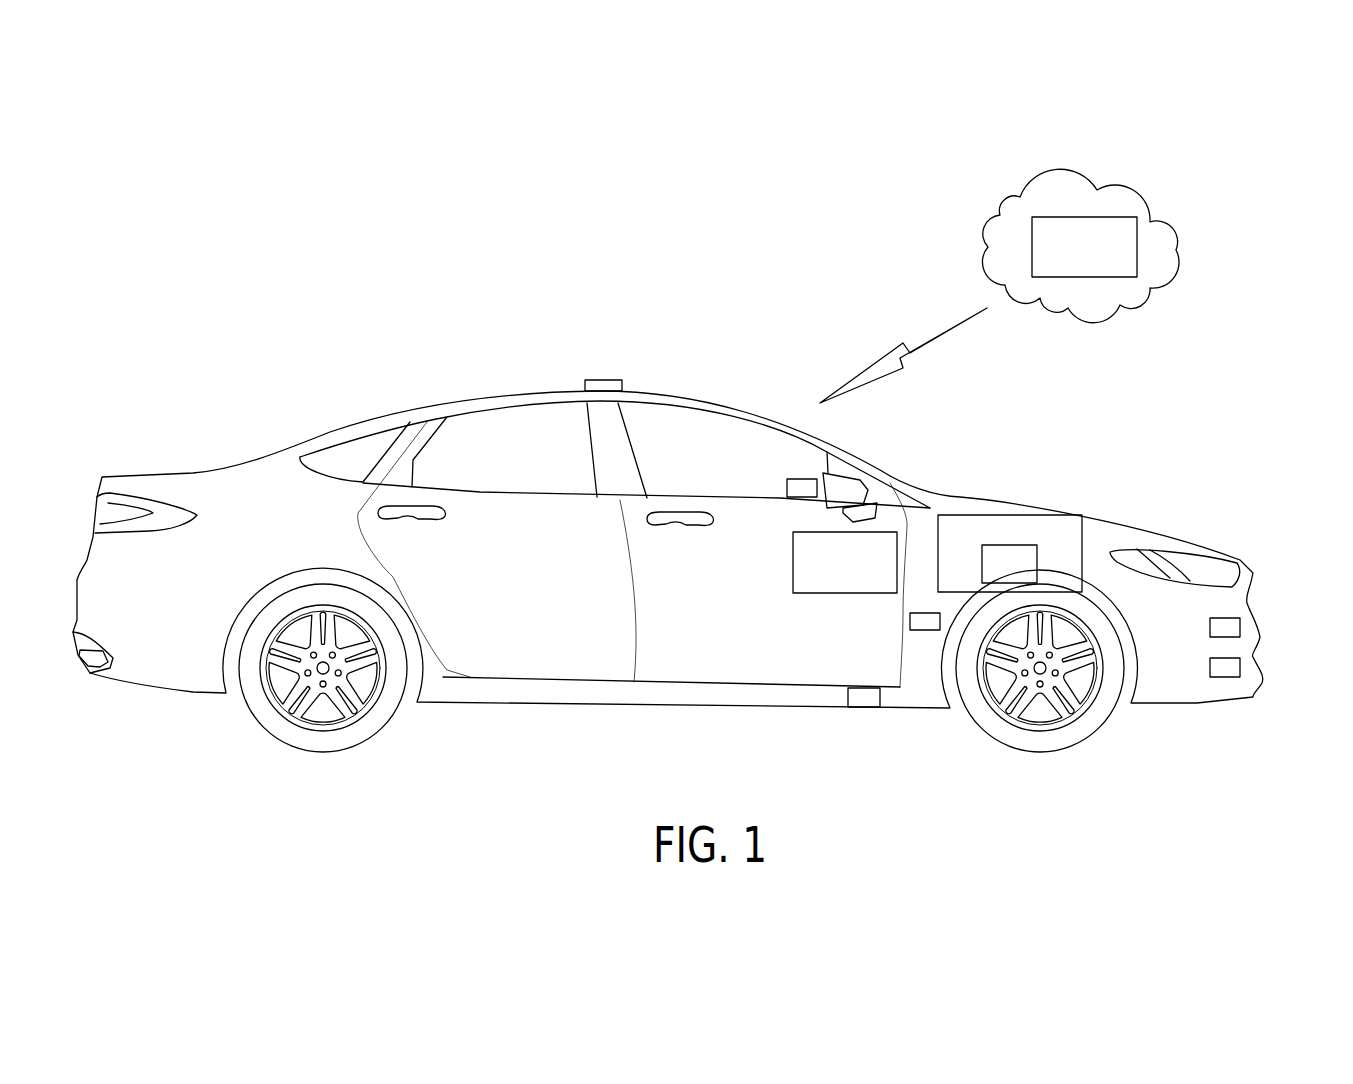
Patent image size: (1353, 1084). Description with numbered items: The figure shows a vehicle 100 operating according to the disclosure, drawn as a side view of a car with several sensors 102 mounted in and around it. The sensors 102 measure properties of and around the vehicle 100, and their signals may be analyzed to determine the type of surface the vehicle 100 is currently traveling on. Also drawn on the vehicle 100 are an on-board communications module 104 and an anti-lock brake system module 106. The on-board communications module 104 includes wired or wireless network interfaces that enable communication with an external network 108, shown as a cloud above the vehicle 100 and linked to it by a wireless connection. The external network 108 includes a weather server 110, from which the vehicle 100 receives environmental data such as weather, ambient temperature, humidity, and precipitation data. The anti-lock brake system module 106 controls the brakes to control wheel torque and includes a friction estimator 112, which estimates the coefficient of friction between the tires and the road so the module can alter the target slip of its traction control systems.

The vehicle 100 is at (345, 420).
The sensors 102 is at (600, 380).
The on-board communications module 104 is at (793, 560).
The anti-lock brake system module 106 is at (1010, 513).
The external network 108 is at (1177, 230).
The weather server 110 is at (1083, 217).
The friction estimator 112 is at (1028, 575).